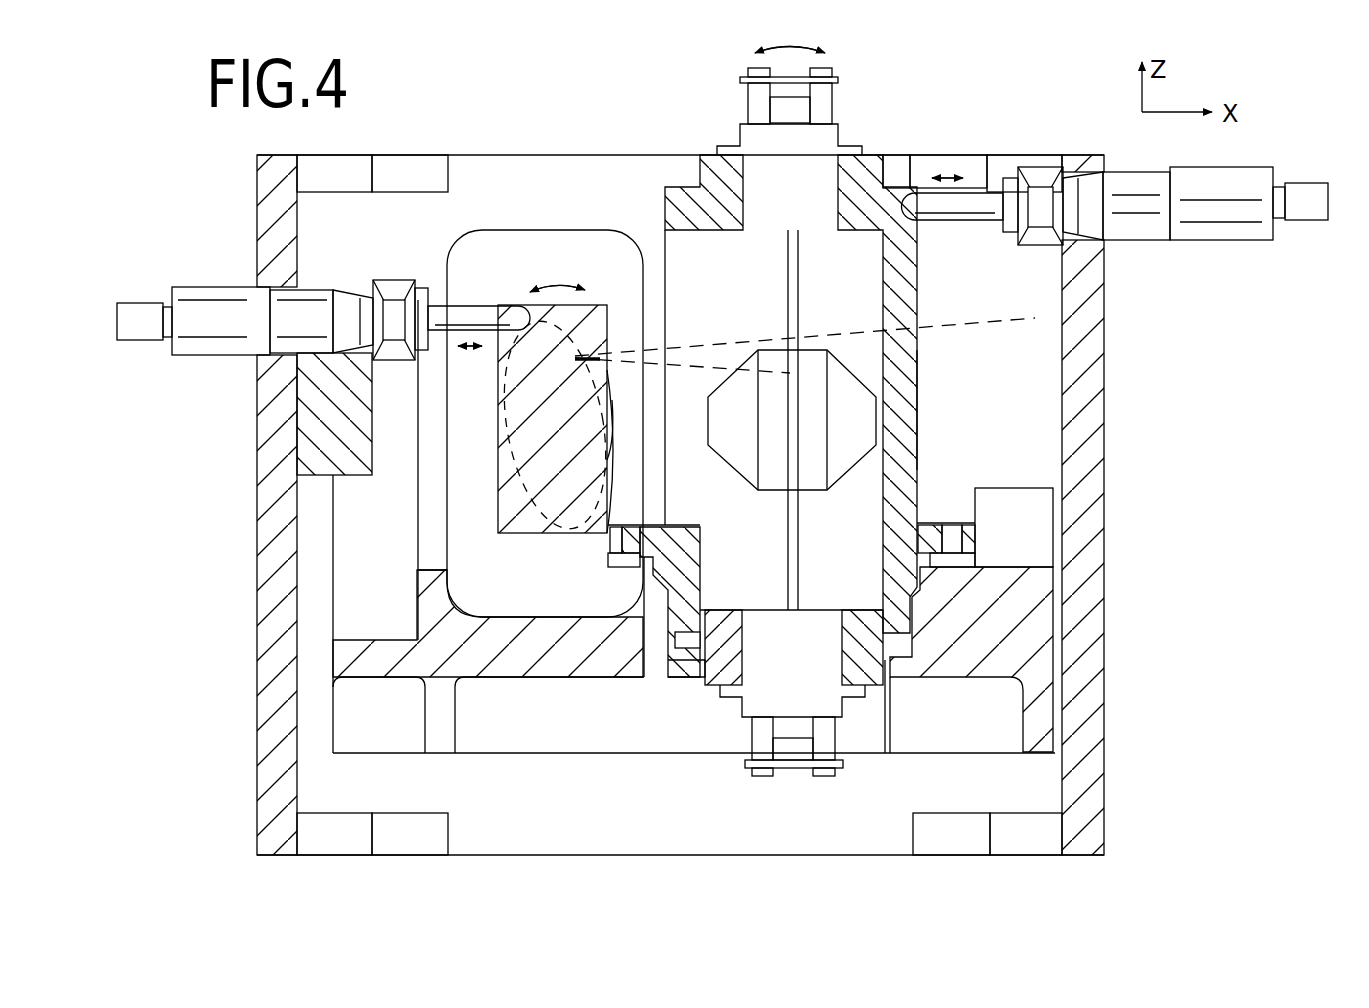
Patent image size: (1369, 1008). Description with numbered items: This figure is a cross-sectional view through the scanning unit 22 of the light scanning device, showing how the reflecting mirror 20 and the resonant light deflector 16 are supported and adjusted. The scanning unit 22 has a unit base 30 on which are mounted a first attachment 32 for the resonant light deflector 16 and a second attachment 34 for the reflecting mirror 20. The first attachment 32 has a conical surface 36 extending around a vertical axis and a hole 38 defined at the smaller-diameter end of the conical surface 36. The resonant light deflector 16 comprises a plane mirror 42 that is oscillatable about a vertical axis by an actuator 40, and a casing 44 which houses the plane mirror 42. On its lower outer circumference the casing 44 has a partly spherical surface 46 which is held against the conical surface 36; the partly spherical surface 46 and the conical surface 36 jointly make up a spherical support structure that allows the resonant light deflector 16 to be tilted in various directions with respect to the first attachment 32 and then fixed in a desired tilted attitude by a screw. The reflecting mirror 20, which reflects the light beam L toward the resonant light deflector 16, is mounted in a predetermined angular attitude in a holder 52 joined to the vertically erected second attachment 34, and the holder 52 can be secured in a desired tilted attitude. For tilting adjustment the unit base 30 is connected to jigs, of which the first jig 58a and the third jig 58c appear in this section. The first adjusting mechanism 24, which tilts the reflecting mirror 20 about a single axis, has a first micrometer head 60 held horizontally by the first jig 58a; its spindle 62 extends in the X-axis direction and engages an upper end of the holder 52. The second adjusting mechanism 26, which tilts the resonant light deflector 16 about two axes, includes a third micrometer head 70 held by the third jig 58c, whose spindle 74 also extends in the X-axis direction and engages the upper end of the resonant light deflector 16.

The resonant light deflector 16 is at (921, 430).
The reflecting mirror 20 is at (612, 440).
The scanning unit 22 is at (575, 122).
The first adjusting mechanism 24 is at (323, 329).
The second adjusting mechanism 26 is at (1115, 194).
The unit base 30 is at (600, 856).
The first attachment 32 is at (980, 650).
The second attachment 34 is at (545, 668).
The conical surface 36 is at (655, 578).
The hole 38 is at (910, 665).
The actuator 40 is at (822, 222).
The plane mirror 42 is at (812, 490).
The casing 44 is at (908, 302).
The partly spherical surface 46 is at (652, 570).
The holder 52 is at (522, 540).
The first jig 58a is at (263, 697).
The third jig 58c is at (1092, 724).
The first micrometer head 60 is at (210, 343).
The spindle 62 is at (472, 306).
The third micrometer head 70 is at (1223, 210).
The spindle 74 is at (978, 208).
The light beam L is at (1008, 325).